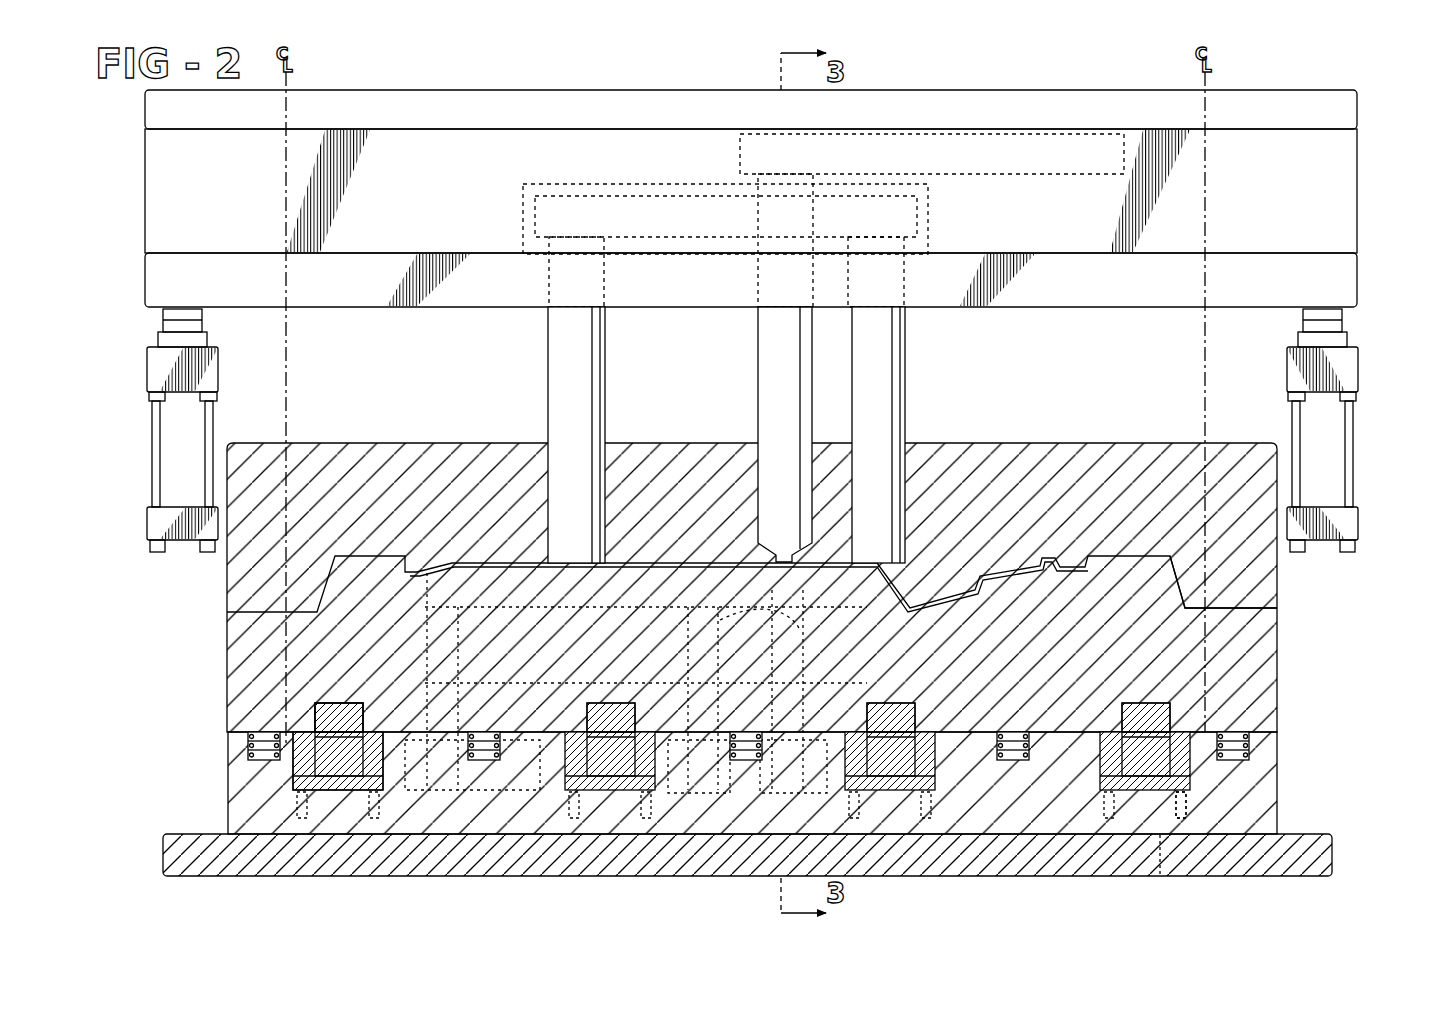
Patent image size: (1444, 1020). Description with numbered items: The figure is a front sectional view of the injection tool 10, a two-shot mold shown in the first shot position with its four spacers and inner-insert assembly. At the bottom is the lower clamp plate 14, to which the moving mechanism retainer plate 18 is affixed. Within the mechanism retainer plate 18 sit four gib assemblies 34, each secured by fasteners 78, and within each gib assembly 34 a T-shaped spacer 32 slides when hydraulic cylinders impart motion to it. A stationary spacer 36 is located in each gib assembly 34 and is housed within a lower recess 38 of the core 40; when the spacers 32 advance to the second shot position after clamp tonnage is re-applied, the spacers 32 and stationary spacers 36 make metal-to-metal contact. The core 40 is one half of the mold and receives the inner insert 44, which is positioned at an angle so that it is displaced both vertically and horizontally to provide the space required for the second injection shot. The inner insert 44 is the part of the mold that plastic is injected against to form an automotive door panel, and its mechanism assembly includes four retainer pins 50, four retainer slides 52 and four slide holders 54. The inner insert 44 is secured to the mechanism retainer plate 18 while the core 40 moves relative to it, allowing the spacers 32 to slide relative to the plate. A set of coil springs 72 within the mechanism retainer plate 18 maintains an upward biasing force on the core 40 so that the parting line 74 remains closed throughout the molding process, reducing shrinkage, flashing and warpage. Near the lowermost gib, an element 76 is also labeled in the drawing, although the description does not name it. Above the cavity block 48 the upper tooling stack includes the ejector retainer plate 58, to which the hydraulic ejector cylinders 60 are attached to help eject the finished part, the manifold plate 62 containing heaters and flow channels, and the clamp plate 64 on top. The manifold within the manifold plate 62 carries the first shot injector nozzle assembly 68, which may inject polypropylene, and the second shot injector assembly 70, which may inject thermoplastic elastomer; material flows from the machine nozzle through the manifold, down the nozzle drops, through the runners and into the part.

The injection tool 10 is at (455, 58).
The lower clamp plate 14 is at (1322, 857).
The mechanism retainer plate 18 is at (1267, 768).
The spacer 32 is at (333, 780).
The gib assembly 34 is at (310, 777).
The stationary spacer 36 is at (880, 718).
The lower recess 38 is at (317, 720).
The core 40 is at (245, 657).
The inner insert 44 is at (462, 644).
The cavity block 48 is at (1105, 447).
The retainer pin 50 is at (507, 540).
The retainer slide 52 is at (500, 770).
The slide holder 54 is at (455, 790).
The ejector retainer plate 58 is at (1352, 283).
The ejector cylinder 60 is at (208, 378).
The manifold plate 62 is at (1352, 190).
The clamp plate 64 is at (1352, 105).
The first shot injector nozzle assembly 68 is at (570, 188).
The second shot injector assembly 70 is at (960, 145).
The coil spring 72 is at (253, 762).
The parting line 74 is at (1245, 603).
The fastener 76 is at (1190, 762).
The fastener 78 is at (1163, 820).